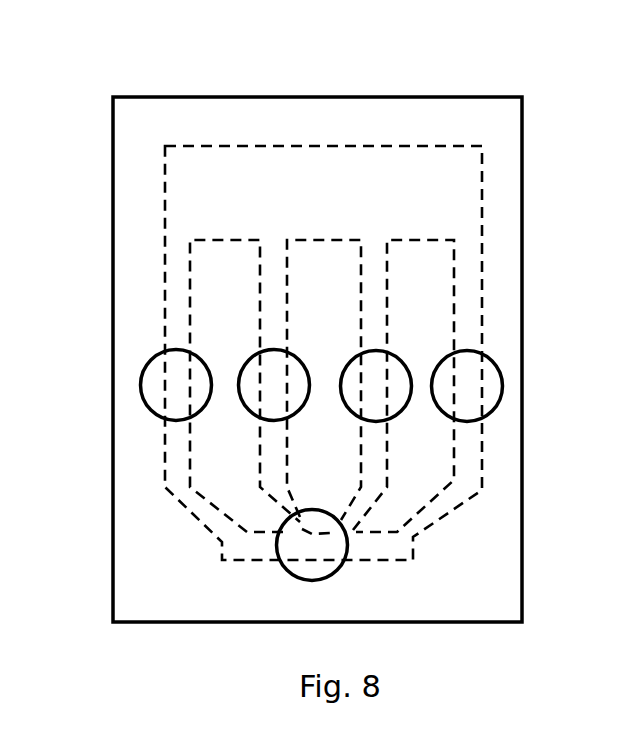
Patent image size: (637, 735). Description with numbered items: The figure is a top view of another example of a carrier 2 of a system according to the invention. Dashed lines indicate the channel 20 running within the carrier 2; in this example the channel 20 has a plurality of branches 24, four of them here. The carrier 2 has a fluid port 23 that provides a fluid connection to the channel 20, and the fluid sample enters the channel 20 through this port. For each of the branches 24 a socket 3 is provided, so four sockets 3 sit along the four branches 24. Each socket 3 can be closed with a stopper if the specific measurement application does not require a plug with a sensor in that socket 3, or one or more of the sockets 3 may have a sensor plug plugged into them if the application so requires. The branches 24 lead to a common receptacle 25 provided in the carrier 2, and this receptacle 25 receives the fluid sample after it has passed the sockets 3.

The carrier 2 is at (130, 97).
The socket 3 is at (141, 397).
The channel 20 is at (478, 492).
The fluid port 23 is at (295, 572).
The branches 24 is at (163, 290).
The receptacle 25 is at (335, 200).